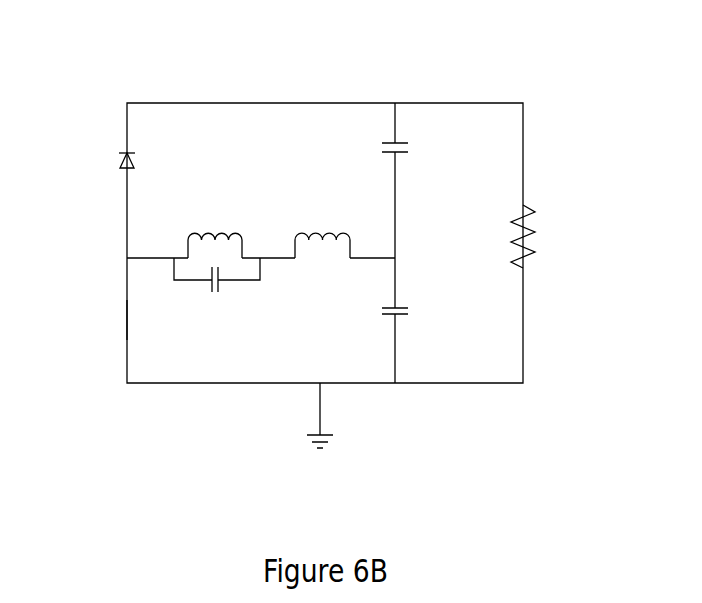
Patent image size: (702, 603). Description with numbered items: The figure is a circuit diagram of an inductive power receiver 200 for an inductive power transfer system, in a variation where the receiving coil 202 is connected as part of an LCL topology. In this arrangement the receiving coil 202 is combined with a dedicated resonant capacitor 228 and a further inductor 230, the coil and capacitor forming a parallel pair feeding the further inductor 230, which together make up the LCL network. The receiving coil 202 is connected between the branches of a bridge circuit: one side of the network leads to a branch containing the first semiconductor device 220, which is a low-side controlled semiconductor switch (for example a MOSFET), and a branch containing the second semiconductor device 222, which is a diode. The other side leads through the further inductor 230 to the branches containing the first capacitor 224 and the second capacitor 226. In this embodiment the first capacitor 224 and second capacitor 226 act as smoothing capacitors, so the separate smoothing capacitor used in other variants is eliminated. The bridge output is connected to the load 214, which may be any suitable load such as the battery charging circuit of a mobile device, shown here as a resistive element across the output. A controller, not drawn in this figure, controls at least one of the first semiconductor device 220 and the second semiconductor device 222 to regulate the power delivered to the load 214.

The inductive power receiver 200 is at (570, 97).
The receiving coil 202 is at (213, 233).
The load 214 is at (532, 233).
The first semiconductor device 220 is at (126, 320).
The second semiconductor device 222 is at (125, 162).
The first capacitor 224 is at (403, 315).
The second capacitor 226 is at (390, 150).
The resonant capacitor 228 is at (218, 292).
The further inductor 230 is at (323, 233).